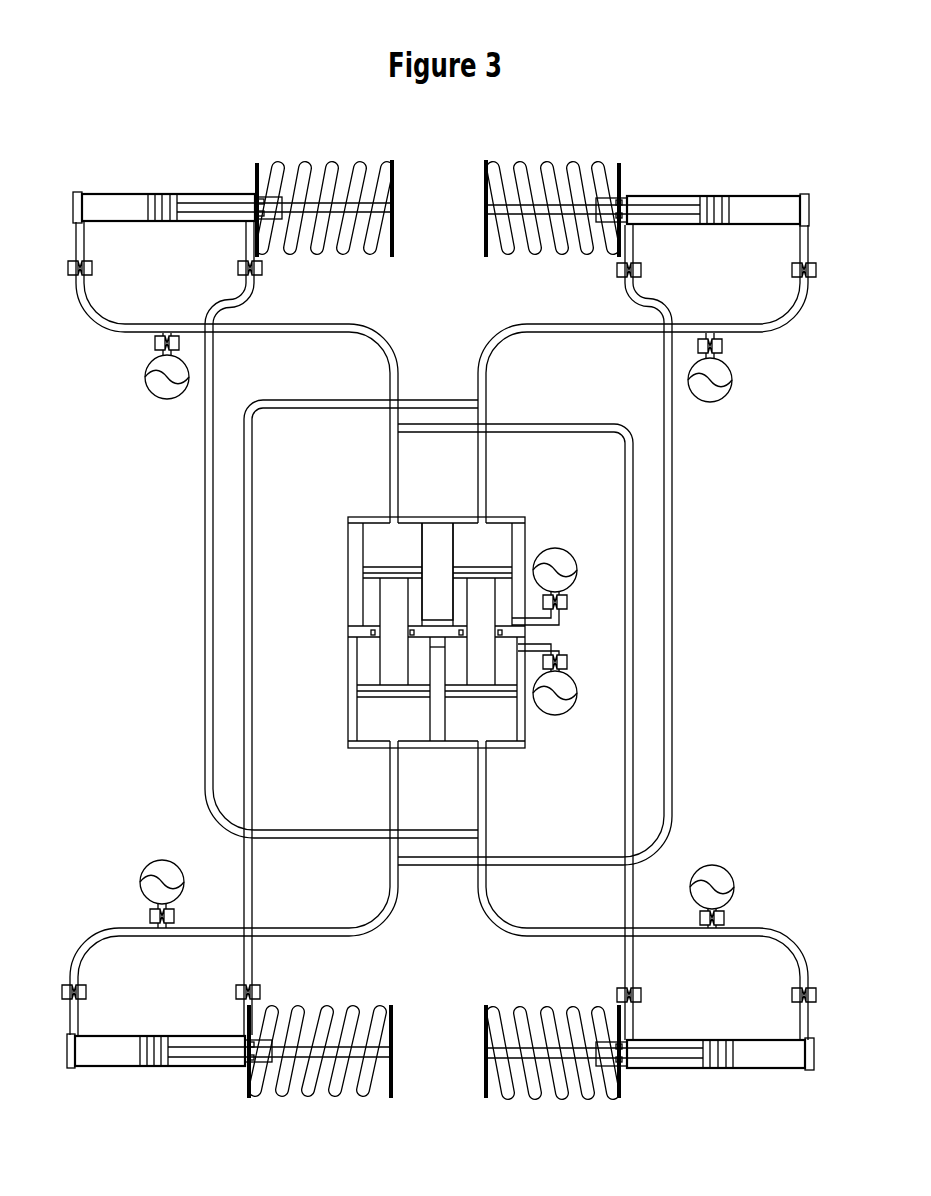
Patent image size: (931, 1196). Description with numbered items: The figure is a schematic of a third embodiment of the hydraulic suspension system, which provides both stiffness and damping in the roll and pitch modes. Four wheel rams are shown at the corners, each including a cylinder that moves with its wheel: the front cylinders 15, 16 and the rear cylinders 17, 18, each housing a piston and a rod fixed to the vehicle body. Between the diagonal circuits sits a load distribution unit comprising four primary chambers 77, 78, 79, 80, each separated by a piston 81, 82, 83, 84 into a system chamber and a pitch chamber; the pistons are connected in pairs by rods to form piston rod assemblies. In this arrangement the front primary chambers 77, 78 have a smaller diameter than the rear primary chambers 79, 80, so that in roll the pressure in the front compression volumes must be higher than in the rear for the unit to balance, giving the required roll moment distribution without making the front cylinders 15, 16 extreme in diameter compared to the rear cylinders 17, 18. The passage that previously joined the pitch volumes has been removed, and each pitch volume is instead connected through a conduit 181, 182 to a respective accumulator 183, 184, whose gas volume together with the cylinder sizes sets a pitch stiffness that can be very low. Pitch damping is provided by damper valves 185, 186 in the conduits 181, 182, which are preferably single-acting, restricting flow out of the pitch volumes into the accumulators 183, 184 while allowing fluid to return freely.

The front cylinder 15 is at (122, 193).
The front cylinder 16 is at (750, 197).
The rear cylinder 17 is at (753, 1068).
The rear cylinder 18 is at (118, 1068).
The front primary chamber 77 is at (358, 500).
The front primary chamber 78 is at (514, 502).
The rear primary chamber 79 is at (516, 764).
The rear primary chamber 80 is at (352, 763).
The piston 81 is at (373, 572).
The piston 82 is at (497, 572).
The piston 83 is at (497, 697).
The piston 84 is at (375, 697).
The conduit 181 is at (560, 621).
The conduit 182 is at (562, 646).
The accumulator 183 is at (571, 555).
The accumulator 184 is at (571, 711).
The damper valve 185 is at (567, 603).
The damper valve 186 is at (567, 666).